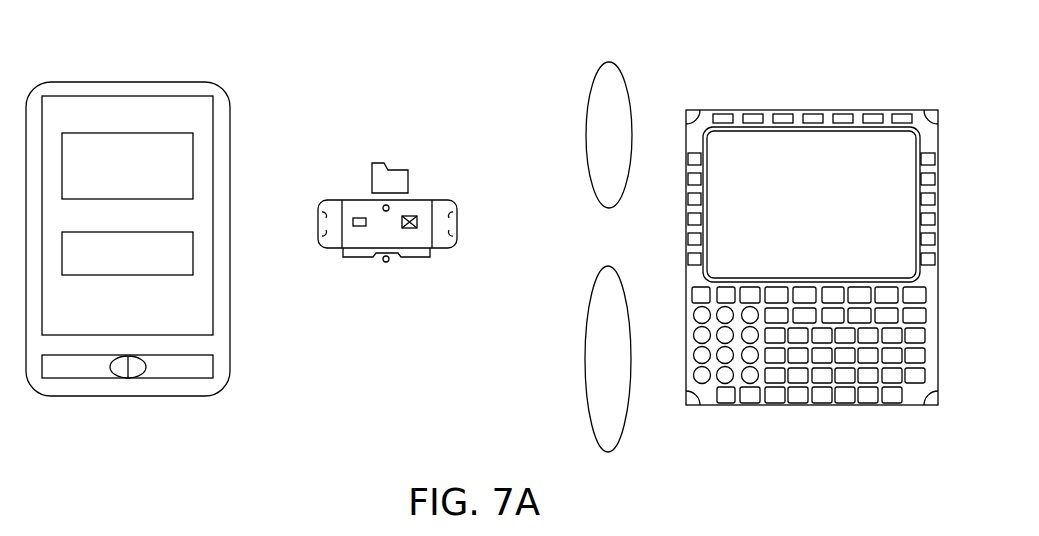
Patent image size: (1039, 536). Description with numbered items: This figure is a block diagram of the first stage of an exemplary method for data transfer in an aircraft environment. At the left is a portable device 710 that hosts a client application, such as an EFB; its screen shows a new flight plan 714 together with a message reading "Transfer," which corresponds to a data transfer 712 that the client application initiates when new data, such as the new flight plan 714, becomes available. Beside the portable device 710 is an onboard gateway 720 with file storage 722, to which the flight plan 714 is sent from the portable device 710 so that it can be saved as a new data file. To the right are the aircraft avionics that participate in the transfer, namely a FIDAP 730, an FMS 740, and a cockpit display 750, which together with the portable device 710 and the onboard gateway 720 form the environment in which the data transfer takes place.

The portable device 710 is at (176, 78).
The data transfer 712 is at (193, 252).
The flight plan 714 is at (193, 163).
The onboard gateway 720 is at (412, 258).
The file storage 722 is at (380, 163).
The FIDAP 730 is at (586, 141).
The FMS 740 is at (585, 333).
The cockpit display 750 is at (804, 110).